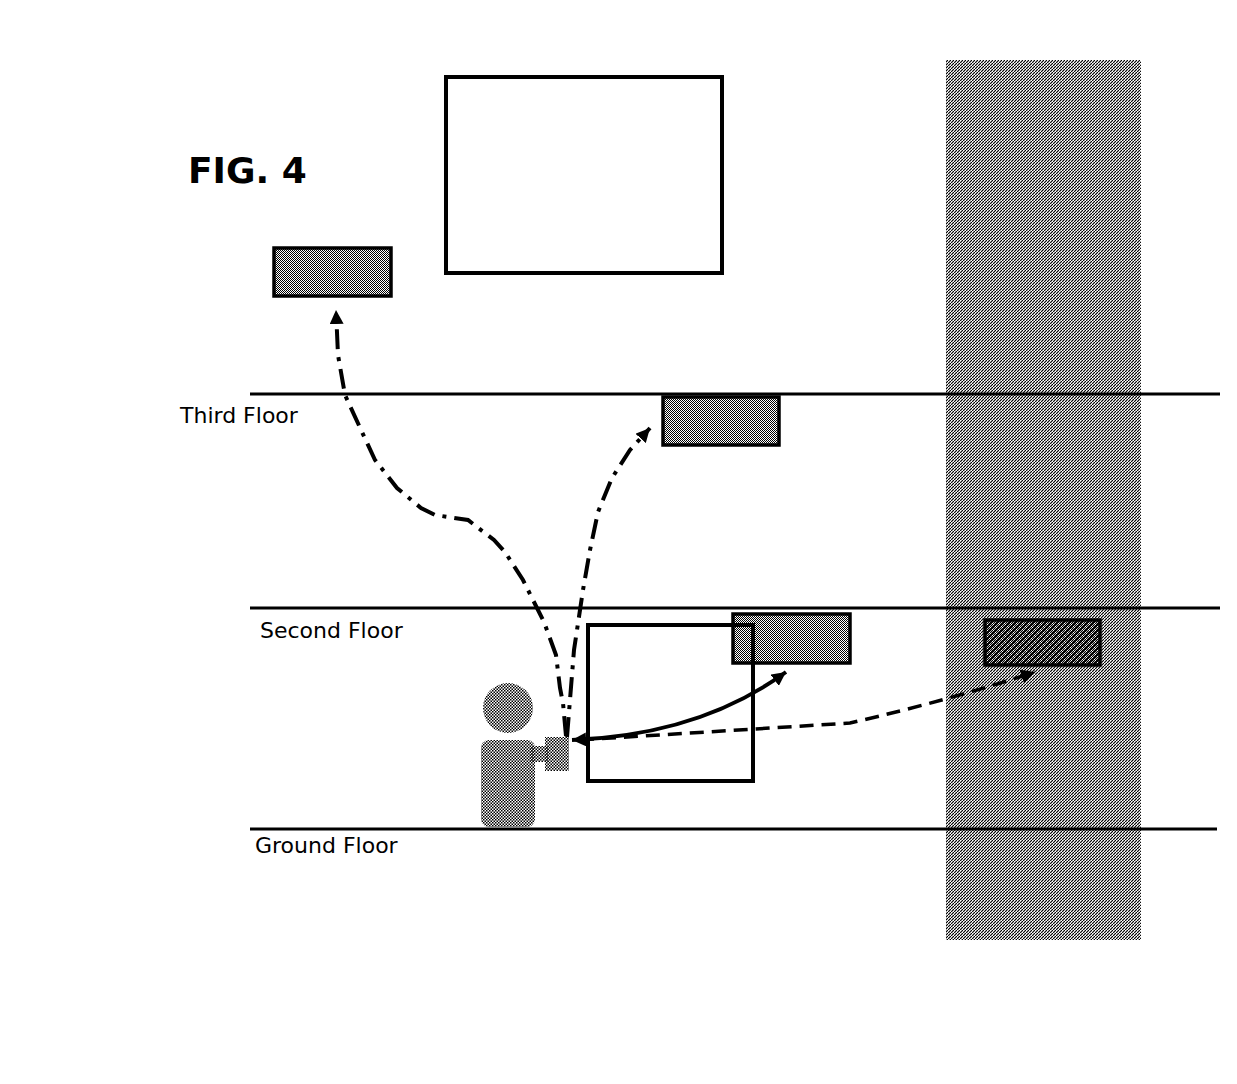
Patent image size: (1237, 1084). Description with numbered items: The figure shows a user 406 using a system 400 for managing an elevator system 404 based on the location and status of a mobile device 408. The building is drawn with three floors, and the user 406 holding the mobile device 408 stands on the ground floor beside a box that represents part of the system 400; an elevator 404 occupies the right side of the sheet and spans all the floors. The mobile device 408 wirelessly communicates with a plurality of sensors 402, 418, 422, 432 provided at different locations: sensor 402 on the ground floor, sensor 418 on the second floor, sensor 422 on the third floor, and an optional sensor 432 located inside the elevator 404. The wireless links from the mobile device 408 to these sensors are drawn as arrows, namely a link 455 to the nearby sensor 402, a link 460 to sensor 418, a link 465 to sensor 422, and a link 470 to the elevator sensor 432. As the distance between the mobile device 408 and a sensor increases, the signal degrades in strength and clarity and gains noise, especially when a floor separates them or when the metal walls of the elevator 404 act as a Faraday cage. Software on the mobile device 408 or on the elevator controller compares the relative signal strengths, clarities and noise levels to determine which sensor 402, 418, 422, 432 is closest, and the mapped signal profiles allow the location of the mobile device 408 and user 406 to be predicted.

The system 400 is at (745, 268).
The sensor 402 is at (815, 620).
The elevator system 404 is at (1143, 748).
The user 406 is at (467, 720).
The mobile device 408 is at (569, 755).
The sensor 418 is at (781, 420).
The sensor 422 is at (393, 268).
The sensor 432 is at (1102, 642).
The signal path to second floor sensor 455 is at (697, 712).
The signal path to third floor sensor 460 is at (583, 528).
The signal path to upper sensor 465 is at (370, 430).
The signal path to elevator sensor 470 is at (885, 715).